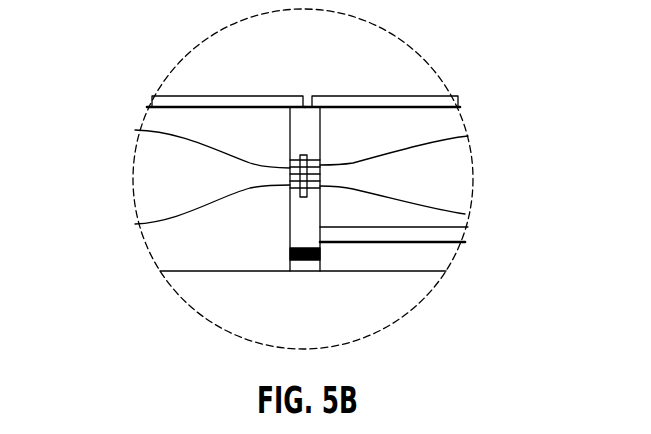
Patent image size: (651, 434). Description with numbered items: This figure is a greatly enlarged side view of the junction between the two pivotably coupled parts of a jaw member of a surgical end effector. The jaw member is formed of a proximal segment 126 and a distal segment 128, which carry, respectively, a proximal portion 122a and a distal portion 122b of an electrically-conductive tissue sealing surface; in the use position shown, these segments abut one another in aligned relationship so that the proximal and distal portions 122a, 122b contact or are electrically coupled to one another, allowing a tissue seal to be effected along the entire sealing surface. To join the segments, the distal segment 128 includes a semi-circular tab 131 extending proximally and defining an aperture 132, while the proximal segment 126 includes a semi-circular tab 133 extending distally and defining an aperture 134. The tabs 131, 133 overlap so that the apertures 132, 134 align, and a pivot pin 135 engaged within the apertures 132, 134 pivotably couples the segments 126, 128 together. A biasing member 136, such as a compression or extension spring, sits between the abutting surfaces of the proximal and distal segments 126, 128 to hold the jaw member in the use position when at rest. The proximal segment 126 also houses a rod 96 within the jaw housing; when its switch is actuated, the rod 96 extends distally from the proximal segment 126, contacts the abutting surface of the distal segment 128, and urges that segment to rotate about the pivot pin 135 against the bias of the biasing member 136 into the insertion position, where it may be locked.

The rod 96 is at (413, 235).
The proximal portion of sealing surface 122a is at (425, 96).
The distal portion of sealing surface 122b is at (185, 96).
The proximal segment 126 is at (443, 178).
The distal segment 128 is at (167, 180).
The semi-circular tab 131 is at (135, 130).
The aperture 132 is at (468, 136).
The semi-circular tab 133 is at (135, 224).
The aperture 134 is at (465, 214).
The pivot pin 135 is at (303, 158).
The biasing member 136 is at (303, 260).